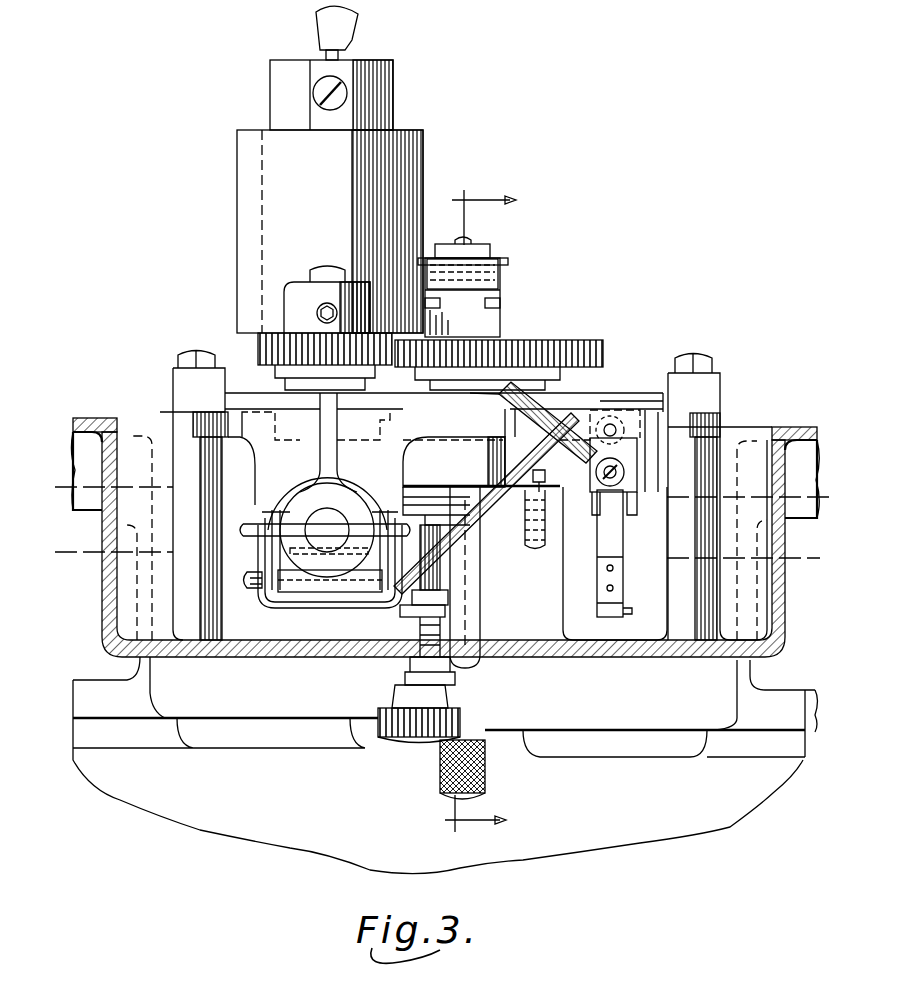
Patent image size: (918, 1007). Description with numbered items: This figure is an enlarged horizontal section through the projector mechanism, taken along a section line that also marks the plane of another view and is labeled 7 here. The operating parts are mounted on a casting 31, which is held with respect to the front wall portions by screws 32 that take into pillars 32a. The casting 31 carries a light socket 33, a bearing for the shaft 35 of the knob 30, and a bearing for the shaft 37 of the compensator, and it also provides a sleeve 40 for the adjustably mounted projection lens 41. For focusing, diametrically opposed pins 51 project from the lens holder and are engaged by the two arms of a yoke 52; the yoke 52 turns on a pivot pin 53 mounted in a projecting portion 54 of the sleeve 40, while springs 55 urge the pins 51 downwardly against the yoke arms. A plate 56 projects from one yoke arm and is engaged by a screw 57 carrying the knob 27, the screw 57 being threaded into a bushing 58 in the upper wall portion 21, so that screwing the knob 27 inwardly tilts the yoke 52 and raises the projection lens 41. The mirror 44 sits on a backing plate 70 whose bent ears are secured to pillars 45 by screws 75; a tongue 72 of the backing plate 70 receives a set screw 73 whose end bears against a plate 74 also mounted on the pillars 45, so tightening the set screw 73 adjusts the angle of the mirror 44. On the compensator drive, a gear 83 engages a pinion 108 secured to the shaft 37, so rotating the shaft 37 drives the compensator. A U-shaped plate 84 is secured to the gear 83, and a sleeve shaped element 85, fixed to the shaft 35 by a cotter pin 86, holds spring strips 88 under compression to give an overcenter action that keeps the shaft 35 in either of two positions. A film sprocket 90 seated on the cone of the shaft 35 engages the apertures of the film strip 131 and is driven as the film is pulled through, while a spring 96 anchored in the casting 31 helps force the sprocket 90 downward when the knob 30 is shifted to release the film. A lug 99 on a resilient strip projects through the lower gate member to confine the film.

The section line 7- 7 is at (480, 509).
The upper wall portion 21 is at (318, 660).
The knob 27 is at (402, 745).
The knob 30 is at (485, 775).
The casting 31 is at (634, 400).
The screws 32 is at (185, 350).
The pillars 32a is at (178, 440).
The light socket 33 is at (237, 205).
The shaft 35 is at (470, 240).
The shaft 37 is at (323, 268).
The sleeve 40 is at (340, 492).
The projection lens 41 is at (327, 530).
The mirror 44 is at (472, 500).
The pillars 45 is at (500, 577).
The pins 51 is at (272, 520).
The yoke 52 is at (268, 604).
The pivot pin 53 is at (246, 580).
The projecting portion 54 is at (318, 595).
The springs 55 is at (297, 508).
The plate 56 is at (460, 598).
The screw 57 is at (400, 612).
The bushing 58 is at (405, 668).
The backing plate 70 is at (470, 555).
The tongue 72 is at (500, 455).
The set screw 73 is at (540, 388).
The plate 74 is at (603, 425).
The screws 75 is at (545, 474).
The gear 83 is at (590, 333).
The U-shaped plate 84 is at (496, 325).
The sleeve shaped element 85 is at (492, 250).
The cotter pin 86 is at (508, 260).
The spring strips 88 is at (500, 283).
The film sprocket 90 is at (458, 486).
The spring 96 is at (560, 525).
The lug 99 is at (623, 566).
The pinion 108 is at (265, 333).
The film strip 131 is at (810, 568).